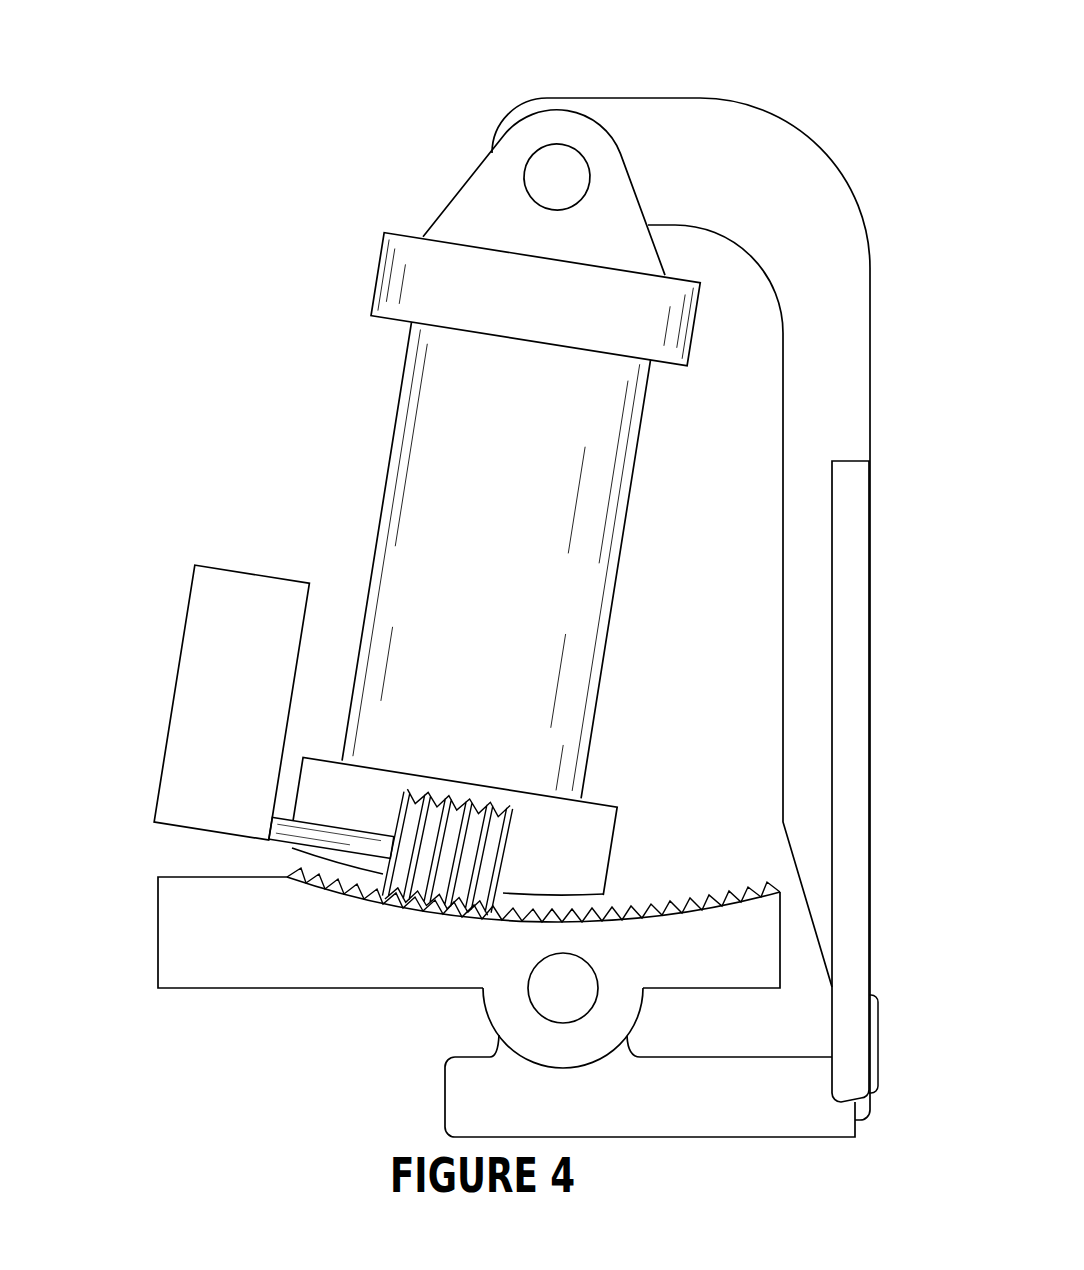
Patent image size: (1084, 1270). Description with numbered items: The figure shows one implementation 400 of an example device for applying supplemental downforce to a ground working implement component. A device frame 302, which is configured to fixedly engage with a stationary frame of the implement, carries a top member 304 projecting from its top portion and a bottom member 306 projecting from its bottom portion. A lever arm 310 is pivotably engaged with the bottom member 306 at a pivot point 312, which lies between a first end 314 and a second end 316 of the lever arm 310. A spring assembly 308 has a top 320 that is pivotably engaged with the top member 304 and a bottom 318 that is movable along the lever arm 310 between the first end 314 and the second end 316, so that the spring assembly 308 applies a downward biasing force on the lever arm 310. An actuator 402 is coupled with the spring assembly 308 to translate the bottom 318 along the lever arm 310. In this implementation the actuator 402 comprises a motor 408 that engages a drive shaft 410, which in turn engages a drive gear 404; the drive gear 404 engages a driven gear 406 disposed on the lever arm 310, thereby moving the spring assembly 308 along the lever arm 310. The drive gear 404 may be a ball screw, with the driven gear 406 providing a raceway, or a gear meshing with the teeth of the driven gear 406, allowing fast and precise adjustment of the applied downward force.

The implementation of an example device for downforce application 400 is at (245, 85).
The device frame 302 is at (888, 548).
The top member 304 is at (592, 110).
The bottom member 306 is at (458, 1106).
The spring assembly 308 is at (380, 420).
The lever arm 310 is at (420, 955).
The pivot point 312 is at (547, 998).
The first end 314 is at (192, 970).
The second end 316 is at (710, 950).
The bottom 318 is at (602, 891).
The top 320 is at (460, 151).
The actuator 402 is at (158, 671).
The drive gear 404 is at (528, 816).
The driven gear 406 is at (358, 910).
The motor 408 is at (227, 558).
The drive shaft 410 is at (283, 835).